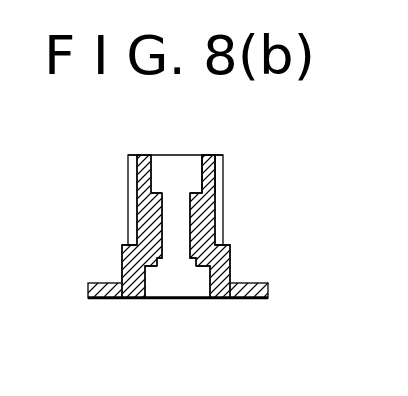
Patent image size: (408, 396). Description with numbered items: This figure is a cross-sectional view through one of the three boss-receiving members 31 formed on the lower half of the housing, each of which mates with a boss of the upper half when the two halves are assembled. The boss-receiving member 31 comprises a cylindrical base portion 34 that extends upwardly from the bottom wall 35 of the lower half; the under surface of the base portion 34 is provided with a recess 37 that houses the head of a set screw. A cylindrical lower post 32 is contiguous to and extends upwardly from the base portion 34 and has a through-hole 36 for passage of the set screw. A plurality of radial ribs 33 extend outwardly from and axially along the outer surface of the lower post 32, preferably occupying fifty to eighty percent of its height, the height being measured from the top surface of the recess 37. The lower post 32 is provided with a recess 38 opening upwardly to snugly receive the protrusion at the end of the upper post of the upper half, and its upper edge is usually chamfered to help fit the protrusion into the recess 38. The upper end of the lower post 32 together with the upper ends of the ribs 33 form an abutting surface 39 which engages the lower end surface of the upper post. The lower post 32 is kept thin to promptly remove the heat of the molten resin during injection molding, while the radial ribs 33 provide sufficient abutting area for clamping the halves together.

The boss-receiving member 31 is at (165, 226).
The lower post 32 is at (218, 206).
The radial ribs 33 is at (221, 168).
The cylindrical base portion 34 is at (122, 245).
The bottom wall 35 is at (261, 285).
The through-hole 36 is at (173, 203).
The recess 37 is at (193, 286).
The recess 38 is at (156, 162).
The abutting surface 39 is at (209, 160).